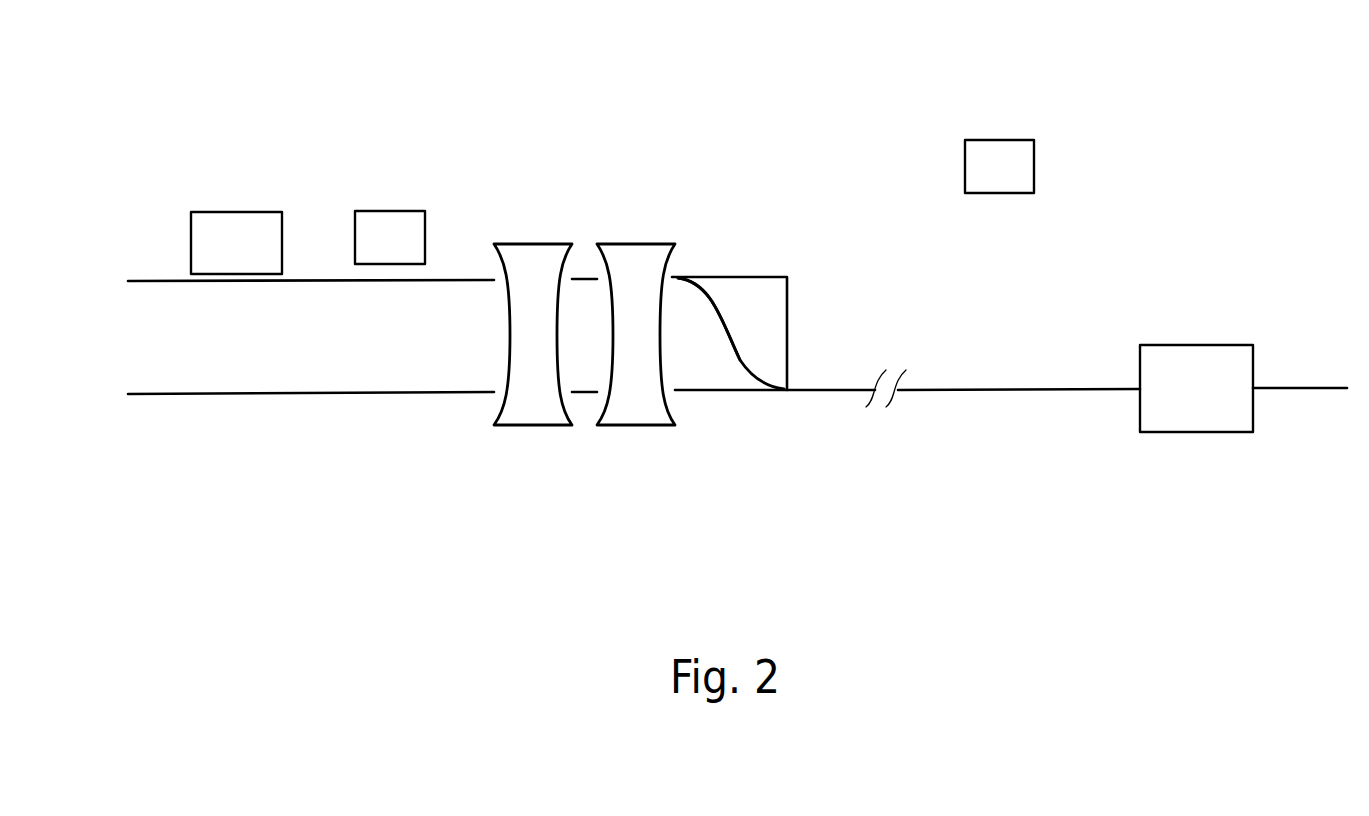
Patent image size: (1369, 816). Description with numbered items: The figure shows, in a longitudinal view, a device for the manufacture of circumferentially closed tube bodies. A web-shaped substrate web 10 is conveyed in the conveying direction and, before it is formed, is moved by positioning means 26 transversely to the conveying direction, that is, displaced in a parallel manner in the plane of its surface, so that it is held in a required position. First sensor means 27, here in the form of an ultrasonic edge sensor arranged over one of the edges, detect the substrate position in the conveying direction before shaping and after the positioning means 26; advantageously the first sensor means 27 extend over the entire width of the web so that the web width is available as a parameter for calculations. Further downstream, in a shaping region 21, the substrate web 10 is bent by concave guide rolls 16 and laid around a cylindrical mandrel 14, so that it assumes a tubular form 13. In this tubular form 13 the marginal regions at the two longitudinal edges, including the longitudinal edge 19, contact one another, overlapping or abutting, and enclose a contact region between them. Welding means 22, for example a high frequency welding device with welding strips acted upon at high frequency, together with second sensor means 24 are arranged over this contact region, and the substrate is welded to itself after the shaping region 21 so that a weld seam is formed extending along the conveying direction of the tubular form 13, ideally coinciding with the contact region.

The substrate web 10 is at (1073, 392).
The tubular form 13 is at (316, 396).
The cylindrical mandrel 14 is at (753, 292).
The concave guide rolls 16 is at (535, 427).
The longitudinal edge 19 is at (727, 342).
The shaping region 21 is at (672, 307).
The welding means 22 is at (235, 212).
The second sensor means 24 is at (388, 211).
The positioning means 26 is at (1195, 345).
The first sensor means 27 is at (997, 140).